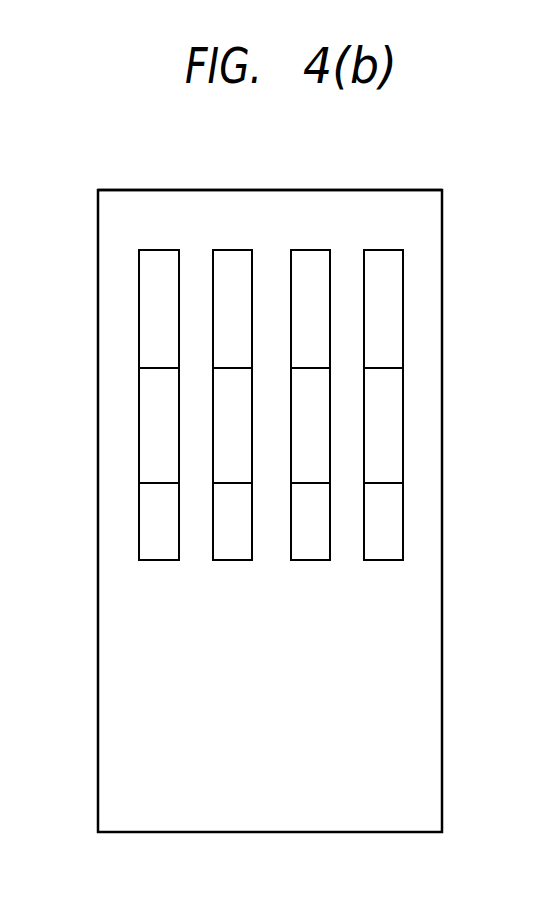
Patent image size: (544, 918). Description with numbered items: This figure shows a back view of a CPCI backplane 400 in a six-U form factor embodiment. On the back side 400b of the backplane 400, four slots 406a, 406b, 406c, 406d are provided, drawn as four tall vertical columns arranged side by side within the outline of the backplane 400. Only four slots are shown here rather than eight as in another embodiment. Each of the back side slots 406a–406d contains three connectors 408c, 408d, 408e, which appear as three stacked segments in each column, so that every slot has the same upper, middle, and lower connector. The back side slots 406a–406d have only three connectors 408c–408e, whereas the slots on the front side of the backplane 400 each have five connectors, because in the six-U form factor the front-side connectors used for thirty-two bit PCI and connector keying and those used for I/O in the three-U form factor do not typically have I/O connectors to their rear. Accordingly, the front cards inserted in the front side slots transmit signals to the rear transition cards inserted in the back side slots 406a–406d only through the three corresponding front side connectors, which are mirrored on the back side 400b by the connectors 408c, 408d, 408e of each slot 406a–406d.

The backplane 400 is at (172, 190).
The back side 400b is at (292, 195).
The slot 406a is at (383, 537).
The slot 406b is at (310, 537).
The slot 406c is at (231, 538).
The slot 406d is at (158, 538).
The connector 408c is at (222, 535).
The connector 408d is at (143, 450).
The connector 408e is at (143, 332).